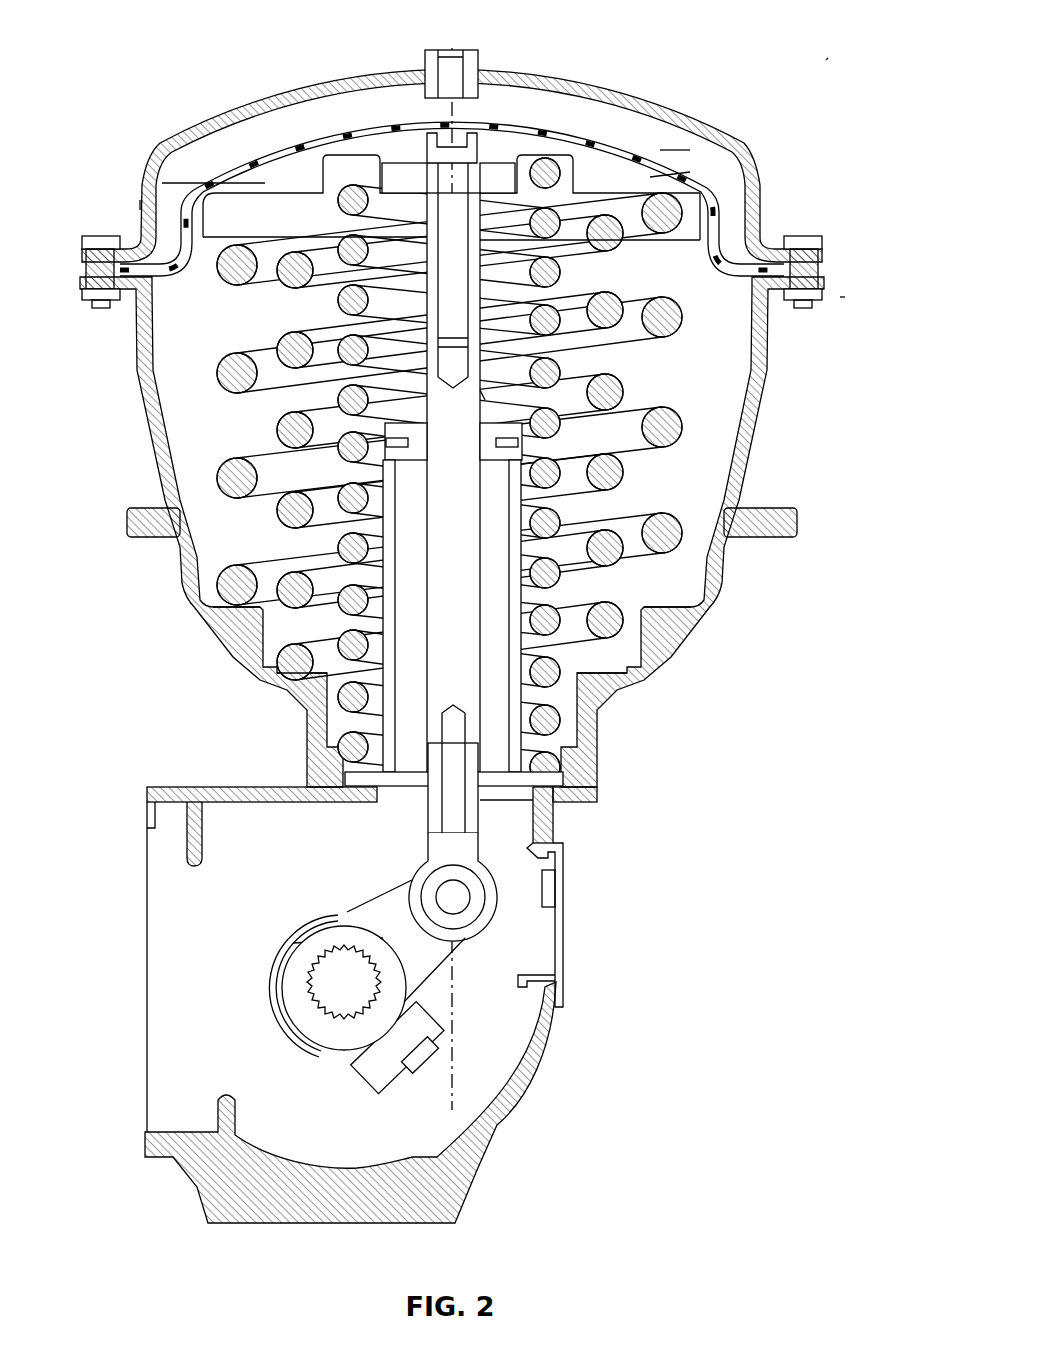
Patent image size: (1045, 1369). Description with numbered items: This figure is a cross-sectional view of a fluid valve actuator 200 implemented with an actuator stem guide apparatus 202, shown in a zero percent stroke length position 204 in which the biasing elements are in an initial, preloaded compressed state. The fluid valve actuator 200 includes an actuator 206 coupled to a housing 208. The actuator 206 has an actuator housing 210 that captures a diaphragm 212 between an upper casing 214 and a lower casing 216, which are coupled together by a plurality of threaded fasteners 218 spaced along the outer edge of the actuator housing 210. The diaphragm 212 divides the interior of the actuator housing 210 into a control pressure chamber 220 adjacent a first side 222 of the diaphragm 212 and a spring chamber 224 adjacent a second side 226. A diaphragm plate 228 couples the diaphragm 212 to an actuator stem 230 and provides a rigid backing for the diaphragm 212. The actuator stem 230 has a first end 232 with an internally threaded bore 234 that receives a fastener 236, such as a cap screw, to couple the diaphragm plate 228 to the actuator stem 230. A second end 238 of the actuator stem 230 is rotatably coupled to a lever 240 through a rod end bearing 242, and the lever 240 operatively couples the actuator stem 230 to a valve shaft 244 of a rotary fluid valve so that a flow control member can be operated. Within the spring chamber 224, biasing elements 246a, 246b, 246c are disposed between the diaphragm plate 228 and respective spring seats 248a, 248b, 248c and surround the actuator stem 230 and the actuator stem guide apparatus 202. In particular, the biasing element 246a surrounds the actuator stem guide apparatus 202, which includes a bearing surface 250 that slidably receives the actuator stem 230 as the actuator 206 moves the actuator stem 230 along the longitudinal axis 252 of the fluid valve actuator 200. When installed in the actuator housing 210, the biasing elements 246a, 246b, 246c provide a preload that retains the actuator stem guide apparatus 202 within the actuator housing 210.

The fluid valve actuator 200 is at (830, 55).
The actuator stem guide apparatus 202 is at (587, 545).
The zero percent stroke length position 204 is at (180, 304).
The actuator 206 is at (846, 297).
The housing 208 is at (537, 1070).
The actuator housing 210 is at (764, 378).
The diaphragm 212 is at (610, 150).
The upper casing 214 is at (232, 104).
The lower casing 216 is at (140, 380).
The threaded fasteners 218 is at (100, 236).
The control pressure chamber 220 is at (585, 123).
The first side 222 is at (668, 172).
The spring chamber 224 is at (230, 435).
The second side 226 is at (672, 158).
The diaphragm plate 228 is at (327, 157).
The actuator stem 230 is at (462, 515).
The first end 232 is at (432, 210).
The internally threaded bore 234 is at (475, 203).
The fastener 236 is at (442, 255).
The second end 238 is at (480, 814).
The lever 240 is at (385, 910).
The rod end bearing 242 is at (498, 905).
The valve shaft 244 is at (340, 978).
The biasing element 246a is at (353, 548).
The biasing element 246b is at (295, 592).
The biasing element 246c is at (237, 478).
The spring seat 248a is at (560, 806).
The spring seat 248b is at (615, 665).
The spring seat 248c is at (665, 600).
The bearing surface 250 is at (490, 400).
The longitudinal axis 252 is at (455, 1000).